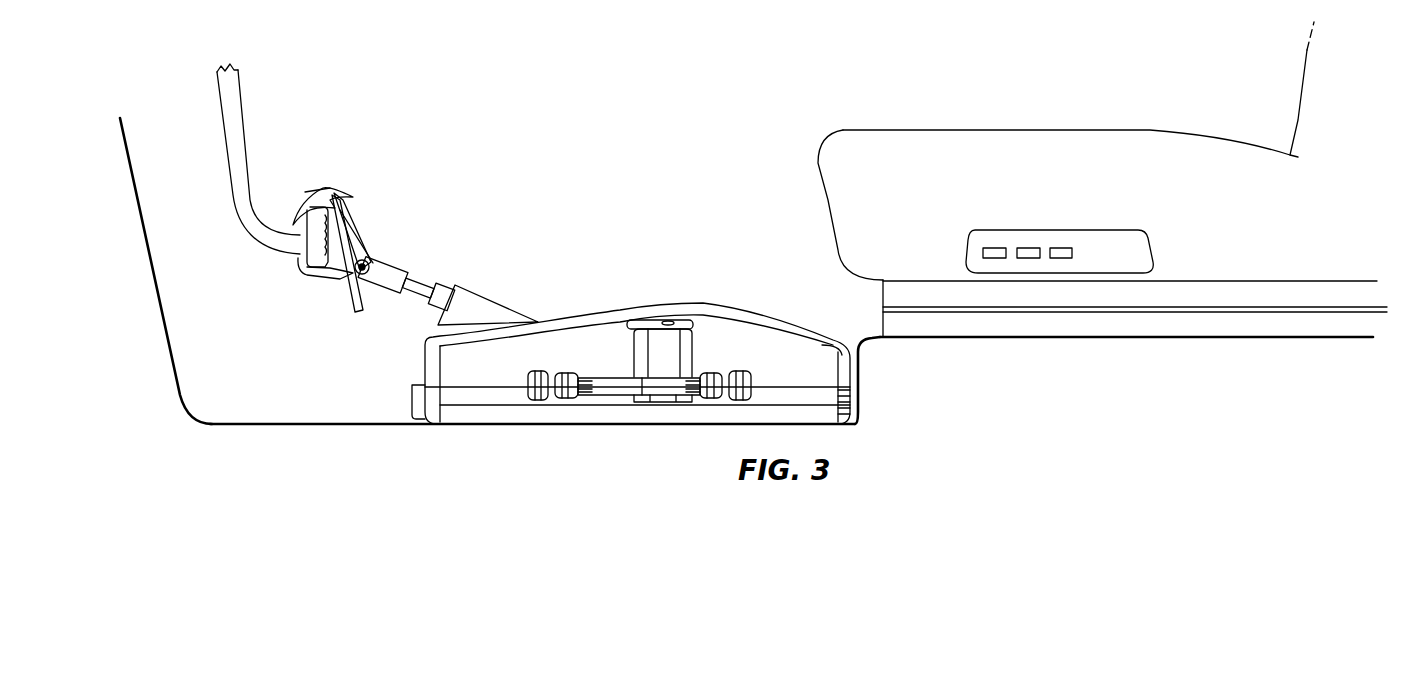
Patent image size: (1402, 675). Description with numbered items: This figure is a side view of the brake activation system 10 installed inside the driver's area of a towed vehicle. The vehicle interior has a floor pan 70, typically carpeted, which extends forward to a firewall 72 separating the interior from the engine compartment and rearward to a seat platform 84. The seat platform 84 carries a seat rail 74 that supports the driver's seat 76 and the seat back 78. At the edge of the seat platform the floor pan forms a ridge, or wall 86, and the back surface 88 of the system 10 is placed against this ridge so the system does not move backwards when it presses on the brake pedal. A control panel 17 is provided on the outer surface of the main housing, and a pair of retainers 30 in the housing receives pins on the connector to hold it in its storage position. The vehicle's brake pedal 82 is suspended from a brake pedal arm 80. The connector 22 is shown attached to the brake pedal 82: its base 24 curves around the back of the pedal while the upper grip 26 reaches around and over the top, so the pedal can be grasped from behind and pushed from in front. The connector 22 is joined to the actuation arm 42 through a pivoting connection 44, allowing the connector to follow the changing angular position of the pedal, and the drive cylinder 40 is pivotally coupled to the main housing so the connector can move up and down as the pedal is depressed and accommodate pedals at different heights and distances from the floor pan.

The brake activation system 10 is at (716, 318).
The control panel 17 is at (690, 318).
The connector 22 is at (348, 224).
The base 24 is at (323, 281).
The upper grip 26 is at (302, 190).
The retainers 30 is at (408, 400).
The drive cylinder 40 is at (498, 299).
The actuation arm 42 is at (410, 280).
The pivoting connection 44 is at (377, 258).
The floor pan 70 is at (352, 425).
The firewall 72 is at (166, 322).
The seat rail 74 is at (1220, 302).
The driver's seat 76 is at (1048, 130).
The seat back 78 is at (1302, 68).
The brake pedal arm 80 is at (245, 133).
The brake pedal 82 is at (312, 242).
The seat platform 84 is at (1277, 338).
The wall 86 is at (855, 374).
The back surface 88 is at (845, 352).